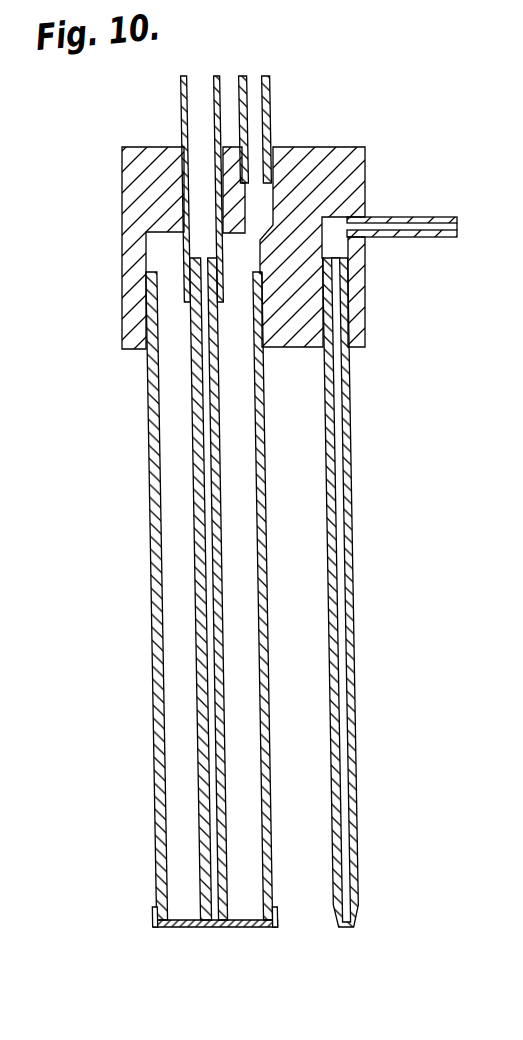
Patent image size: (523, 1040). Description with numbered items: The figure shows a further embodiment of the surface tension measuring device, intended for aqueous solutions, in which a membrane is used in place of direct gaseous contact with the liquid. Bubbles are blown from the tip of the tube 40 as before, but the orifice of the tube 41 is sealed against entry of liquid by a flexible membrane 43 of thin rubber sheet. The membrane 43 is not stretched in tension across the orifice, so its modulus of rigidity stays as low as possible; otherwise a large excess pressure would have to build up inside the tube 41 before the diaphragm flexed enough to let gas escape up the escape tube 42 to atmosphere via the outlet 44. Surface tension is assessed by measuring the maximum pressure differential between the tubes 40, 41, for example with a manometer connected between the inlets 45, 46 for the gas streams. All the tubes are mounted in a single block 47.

The tube 40 is at (343, 460).
The tube 41 is at (146, 427).
The escape tube 42 is at (190, 488).
The flexible membrane 43 is at (158, 926).
The outlet 44 is at (493, 225).
The inlet 45 is at (256, 38).
The inlet 46 is at (199, 42).
The block 47 is at (122, 300).